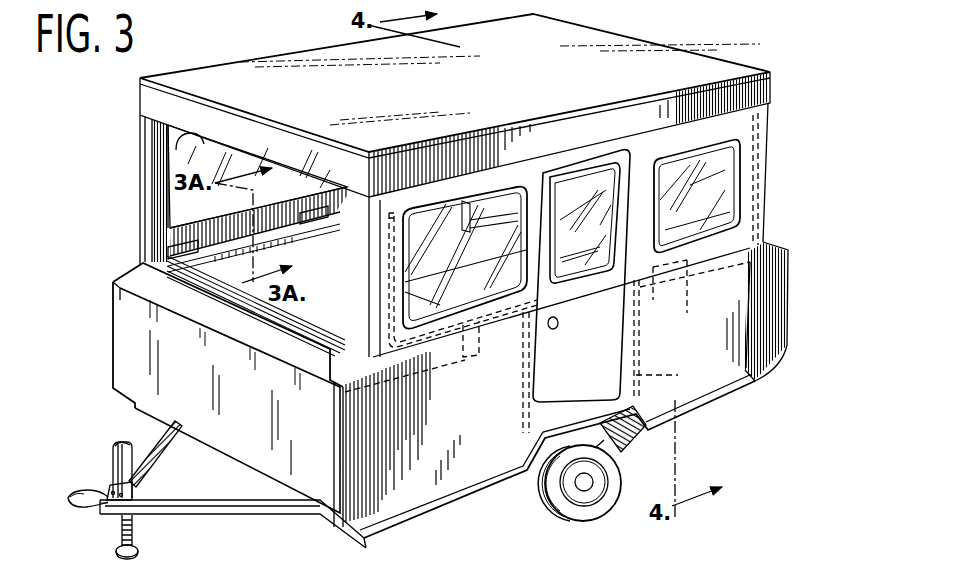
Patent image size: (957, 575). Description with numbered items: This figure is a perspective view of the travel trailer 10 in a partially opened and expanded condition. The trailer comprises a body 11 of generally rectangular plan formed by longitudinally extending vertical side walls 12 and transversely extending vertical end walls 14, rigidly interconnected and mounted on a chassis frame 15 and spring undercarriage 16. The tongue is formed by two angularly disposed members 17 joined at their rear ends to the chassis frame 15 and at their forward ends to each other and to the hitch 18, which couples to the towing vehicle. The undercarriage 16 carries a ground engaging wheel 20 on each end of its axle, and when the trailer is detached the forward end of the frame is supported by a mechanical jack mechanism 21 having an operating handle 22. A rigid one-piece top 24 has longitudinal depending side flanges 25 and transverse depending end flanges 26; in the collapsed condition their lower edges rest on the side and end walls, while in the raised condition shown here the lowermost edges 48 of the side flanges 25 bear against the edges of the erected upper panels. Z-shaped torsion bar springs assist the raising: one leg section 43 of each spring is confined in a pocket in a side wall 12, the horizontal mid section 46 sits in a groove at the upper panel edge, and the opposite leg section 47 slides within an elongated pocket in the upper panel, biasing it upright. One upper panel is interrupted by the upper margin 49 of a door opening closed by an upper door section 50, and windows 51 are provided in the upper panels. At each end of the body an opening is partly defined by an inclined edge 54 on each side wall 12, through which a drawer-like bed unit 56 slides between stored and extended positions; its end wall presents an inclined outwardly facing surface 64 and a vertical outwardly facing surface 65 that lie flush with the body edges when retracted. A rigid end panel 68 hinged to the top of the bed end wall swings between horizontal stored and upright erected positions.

The travel trailer 10 is at (399, 92).
The body 11 is at (792, 287).
The side walls 12 is at (747, 355).
The end walls 14 is at (278, 437).
The chassis frame 15 is at (712, 410).
The spring undercarriage 16 is at (627, 451).
The tongue members 17 is at (165, 444).
The hitch 18 is at (68, 494).
The ground engaging wheel 20 is at (562, 512).
The mechanical jack mechanism 21 is at (127, 464).
The operating handle 22 is at (110, 443).
The one-piece top 24 is at (678, 68).
The side flanges 25 is at (758, 90).
The end flanges 26 is at (152, 98).
The leg section 43 is at (520, 413).
The mid section 46 is at (583, 326).
The leg section 47 is at (397, 249).
The lowermost edges 48 is at (195, 147).
The upper margin of door opening 49 is at (552, 262).
The door section 50 is at (622, 166).
The windows 51 is at (447, 220).
The inclined edge 54 is at (132, 262).
The bed unit 56 is at (290, 325).
The inclined outwardly facing surface 64 is at (172, 290).
The vertical outwardly facing surface 65 is at (175, 320).
The end panel 68 is at (337, 293).